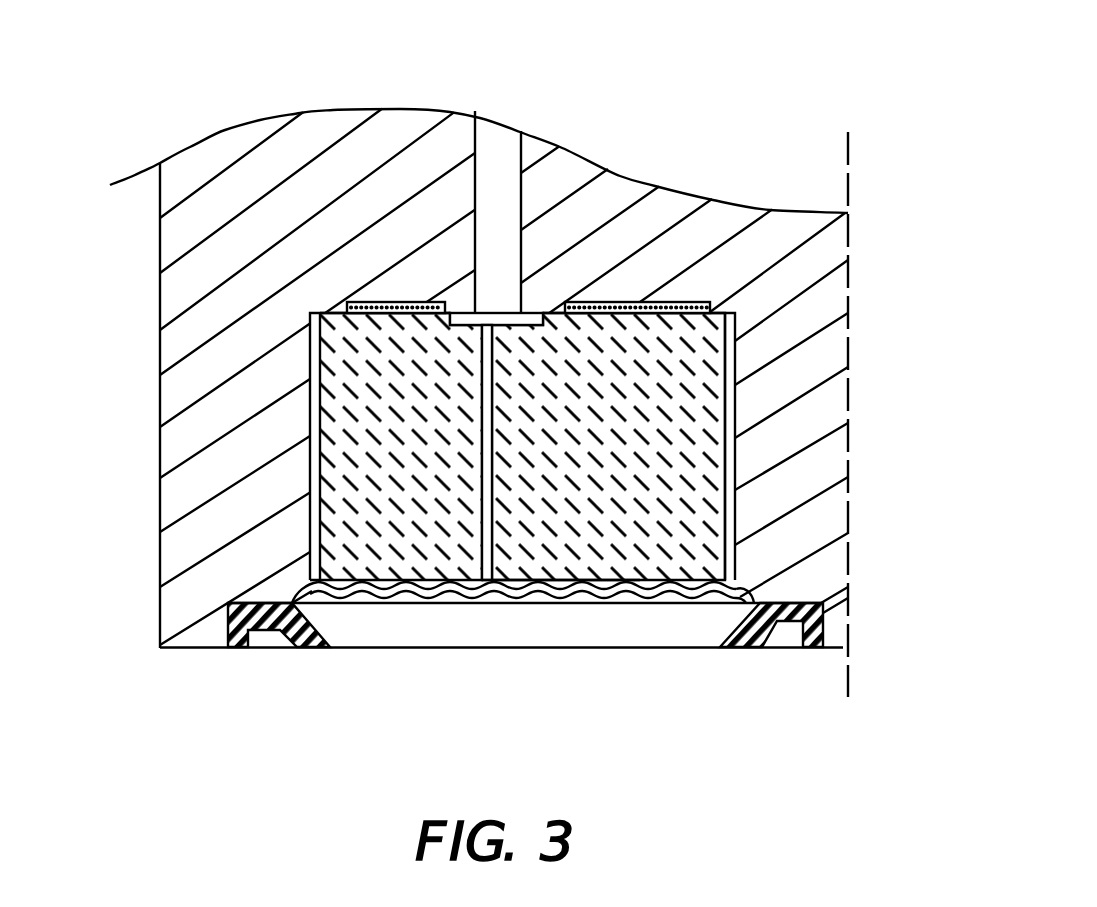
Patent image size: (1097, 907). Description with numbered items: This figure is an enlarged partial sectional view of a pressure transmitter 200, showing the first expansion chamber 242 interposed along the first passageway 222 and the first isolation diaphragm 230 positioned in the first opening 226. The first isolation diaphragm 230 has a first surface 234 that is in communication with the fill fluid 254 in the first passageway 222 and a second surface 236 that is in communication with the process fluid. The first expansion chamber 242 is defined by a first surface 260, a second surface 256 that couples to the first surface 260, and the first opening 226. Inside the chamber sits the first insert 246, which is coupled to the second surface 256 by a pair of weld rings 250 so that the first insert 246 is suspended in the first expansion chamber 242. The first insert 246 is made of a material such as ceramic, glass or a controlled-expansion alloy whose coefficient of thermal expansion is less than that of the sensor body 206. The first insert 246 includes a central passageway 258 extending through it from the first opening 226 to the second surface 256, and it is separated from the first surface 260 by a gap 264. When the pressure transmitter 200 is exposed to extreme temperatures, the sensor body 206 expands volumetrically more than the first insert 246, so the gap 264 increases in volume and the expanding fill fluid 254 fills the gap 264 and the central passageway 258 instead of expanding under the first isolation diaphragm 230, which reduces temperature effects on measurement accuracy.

The pressure transmitter 200 is at (754, 110).
The sensor body 206 is at (160, 290).
The first passageway 222 is at (475, 218).
The first opening 226 is at (325, 638).
The first isolation diaphragm 230 is at (428, 587).
The first surface 234 is at (662, 580).
The second surface 236 is at (717, 590).
The first expansion chamber 242 is at (312, 425).
The first insert 246 is at (338, 502).
The weld ring 250 is at (381, 302).
The fill fluid 254 is at (598, 580).
The second surface 256 is at (553, 312).
The central passageway 258 is at (494, 413).
The first surface 260 is at (307, 457).
The gap 264 is at (313, 361).